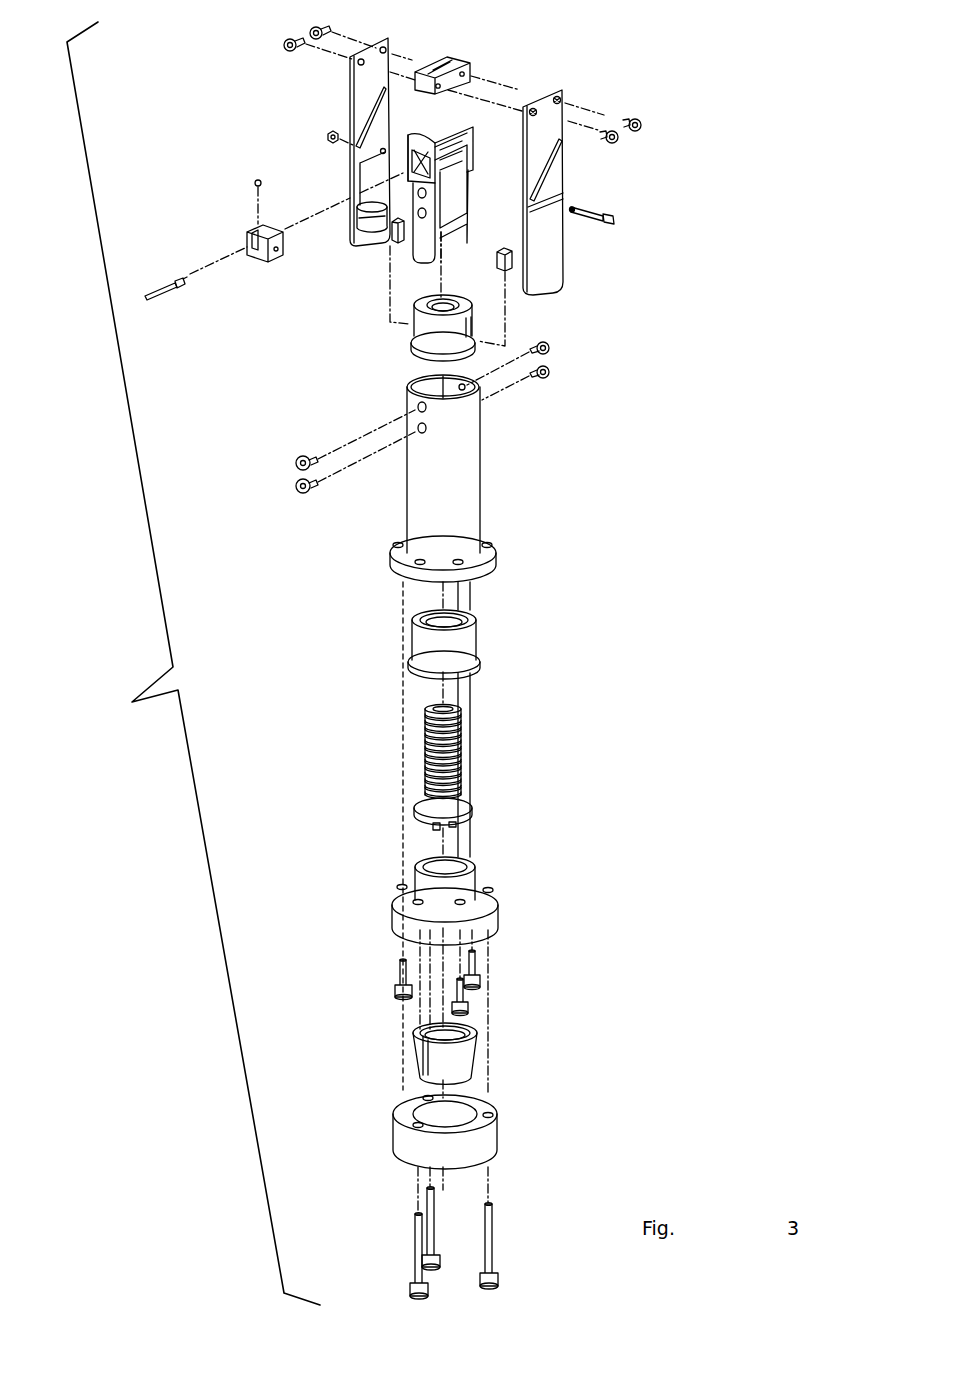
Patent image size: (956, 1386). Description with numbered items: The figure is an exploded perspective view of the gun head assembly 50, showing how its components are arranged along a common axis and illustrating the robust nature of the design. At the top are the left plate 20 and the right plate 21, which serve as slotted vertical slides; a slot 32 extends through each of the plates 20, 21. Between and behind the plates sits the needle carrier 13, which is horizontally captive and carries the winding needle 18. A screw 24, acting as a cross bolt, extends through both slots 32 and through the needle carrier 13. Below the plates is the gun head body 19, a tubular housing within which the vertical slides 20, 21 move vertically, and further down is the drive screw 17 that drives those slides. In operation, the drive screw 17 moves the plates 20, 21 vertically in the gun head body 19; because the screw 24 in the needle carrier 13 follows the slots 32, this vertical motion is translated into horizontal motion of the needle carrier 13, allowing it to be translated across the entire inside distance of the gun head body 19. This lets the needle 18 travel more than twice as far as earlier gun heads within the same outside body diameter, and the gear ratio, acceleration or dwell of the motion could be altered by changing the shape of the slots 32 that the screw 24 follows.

The gun head assembly 50 is at (193, 663).
The right plate 21 is at (370, 40).
The left plate 20 is at (547, 92).
The slot 32 is at (368, 114).
The needle carrier 13 is at (265, 262).
The winding needle 18 is at (165, 297).
The screw 24 is at (588, 224).
The gun head body 19 is at (480, 447).
The drive screw 17 is at (462, 744).